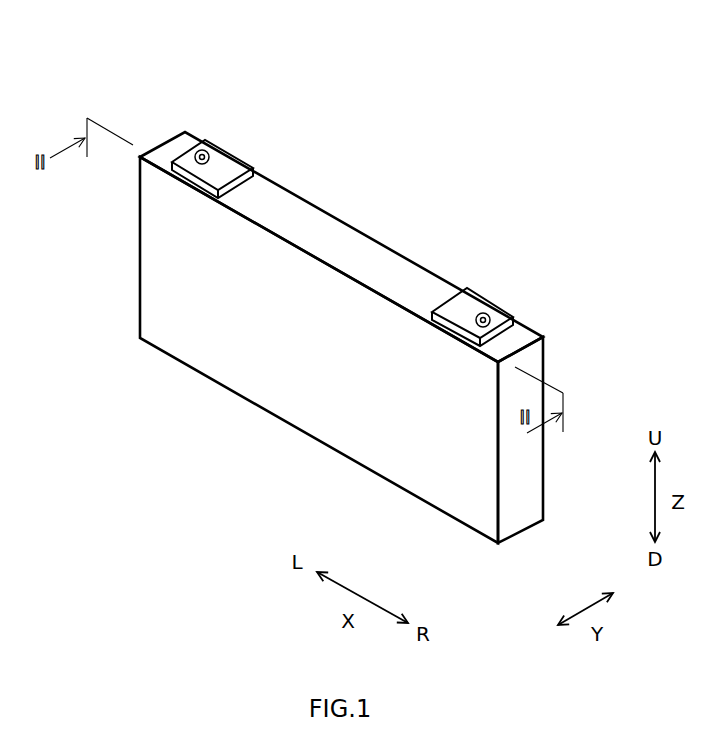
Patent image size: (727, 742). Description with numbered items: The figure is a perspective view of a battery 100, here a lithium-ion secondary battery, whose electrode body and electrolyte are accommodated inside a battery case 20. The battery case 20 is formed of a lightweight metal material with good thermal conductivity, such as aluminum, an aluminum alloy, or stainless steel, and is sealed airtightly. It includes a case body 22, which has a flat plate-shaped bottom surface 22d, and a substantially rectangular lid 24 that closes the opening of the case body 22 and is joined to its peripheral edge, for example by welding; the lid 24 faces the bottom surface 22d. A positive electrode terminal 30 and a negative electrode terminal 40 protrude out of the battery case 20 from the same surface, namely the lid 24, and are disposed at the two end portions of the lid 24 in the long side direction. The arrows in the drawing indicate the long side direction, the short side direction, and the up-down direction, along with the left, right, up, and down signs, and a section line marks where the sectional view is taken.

The battery 100 is at (145, 87).
The battery case 20 is at (547, 327).
The case body 22 is at (527, 486).
The bottom surface 22d is at (233, 395).
The lid (sealing plate) 24 is at (342, 232).
The positive electrode terminal 30 is at (213, 162).
The negative electrode terminal 40 is at (475, 315).